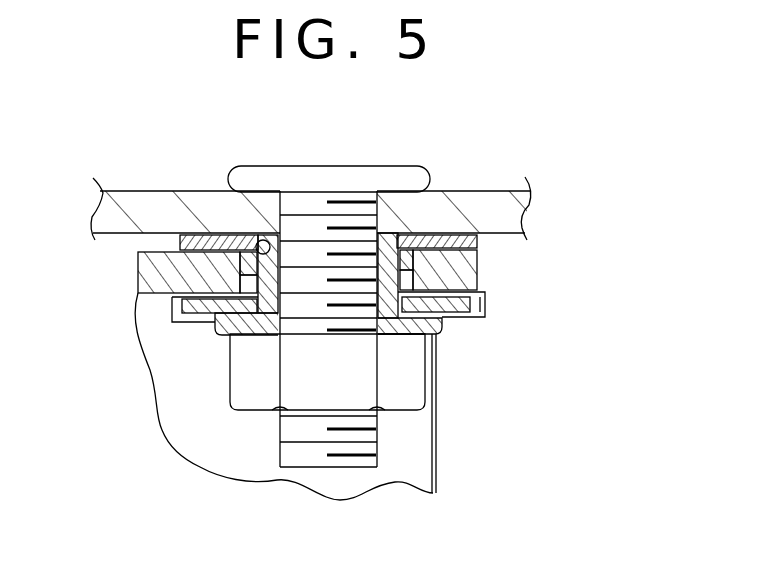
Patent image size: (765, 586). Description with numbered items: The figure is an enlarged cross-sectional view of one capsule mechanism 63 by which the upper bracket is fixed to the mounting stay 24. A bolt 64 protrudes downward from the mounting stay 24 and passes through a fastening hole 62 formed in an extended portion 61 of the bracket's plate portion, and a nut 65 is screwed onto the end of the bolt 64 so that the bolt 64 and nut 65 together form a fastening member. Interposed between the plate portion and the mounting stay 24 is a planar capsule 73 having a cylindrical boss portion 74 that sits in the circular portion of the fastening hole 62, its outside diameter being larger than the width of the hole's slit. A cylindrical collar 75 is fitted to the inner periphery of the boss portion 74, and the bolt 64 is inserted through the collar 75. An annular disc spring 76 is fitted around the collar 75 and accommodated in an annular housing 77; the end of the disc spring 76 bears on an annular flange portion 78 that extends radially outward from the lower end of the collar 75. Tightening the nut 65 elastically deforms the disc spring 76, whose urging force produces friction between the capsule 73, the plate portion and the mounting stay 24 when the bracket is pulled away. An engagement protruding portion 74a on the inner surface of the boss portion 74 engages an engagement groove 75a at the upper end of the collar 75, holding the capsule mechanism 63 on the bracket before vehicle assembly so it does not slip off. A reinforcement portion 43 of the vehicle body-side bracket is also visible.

The mounting stay 24 is at (152, 206).
The reinforcement portion 43 is at (437, 470).
The extended portion 61 is at (150, 270).
The fastening hole 62 is at (213, 233).
The capsule mechanism 63 is at (560, 167).
The bolt 64 is at (324, 176).
The nut 65 is at (245, 371).
The capsule 73 is at (478, 246).
The boss portion 74 is at (478, 283).
The engagement protruding portion 74a is at (256, 233).
The collar 75 is at (438, 335).
The engagement groove 75a is at (413, 233).
The disc spring 76 is at (447, 321).
The housing 77 is at (487, 310).
The flange portion 78 is at (407, 334).